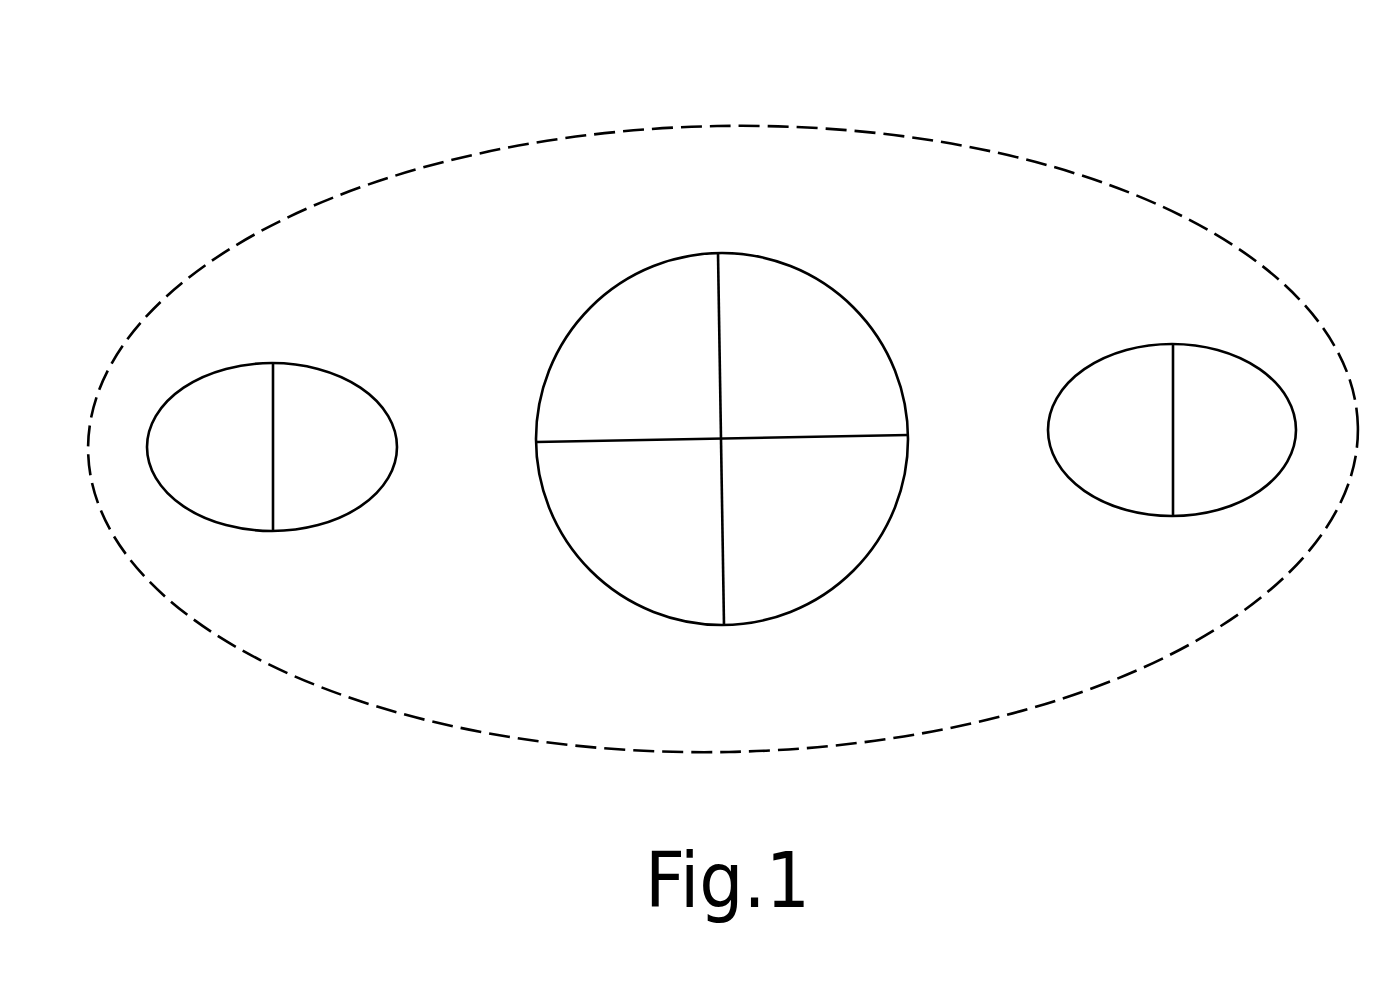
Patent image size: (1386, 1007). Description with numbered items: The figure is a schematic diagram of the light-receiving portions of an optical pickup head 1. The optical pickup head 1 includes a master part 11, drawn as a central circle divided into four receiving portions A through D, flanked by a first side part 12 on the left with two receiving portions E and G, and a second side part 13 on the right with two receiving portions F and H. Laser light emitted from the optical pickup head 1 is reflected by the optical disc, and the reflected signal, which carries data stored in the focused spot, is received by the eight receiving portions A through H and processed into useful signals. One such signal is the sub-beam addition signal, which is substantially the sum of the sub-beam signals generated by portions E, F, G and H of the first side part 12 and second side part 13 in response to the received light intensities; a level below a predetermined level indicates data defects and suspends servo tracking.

The optical pickup head 1 is at (1097, 168).
The master part 11 is at (762, 240).
The first side part 12 is at (215, 360).
The second side part 13 is at (1230, 340).